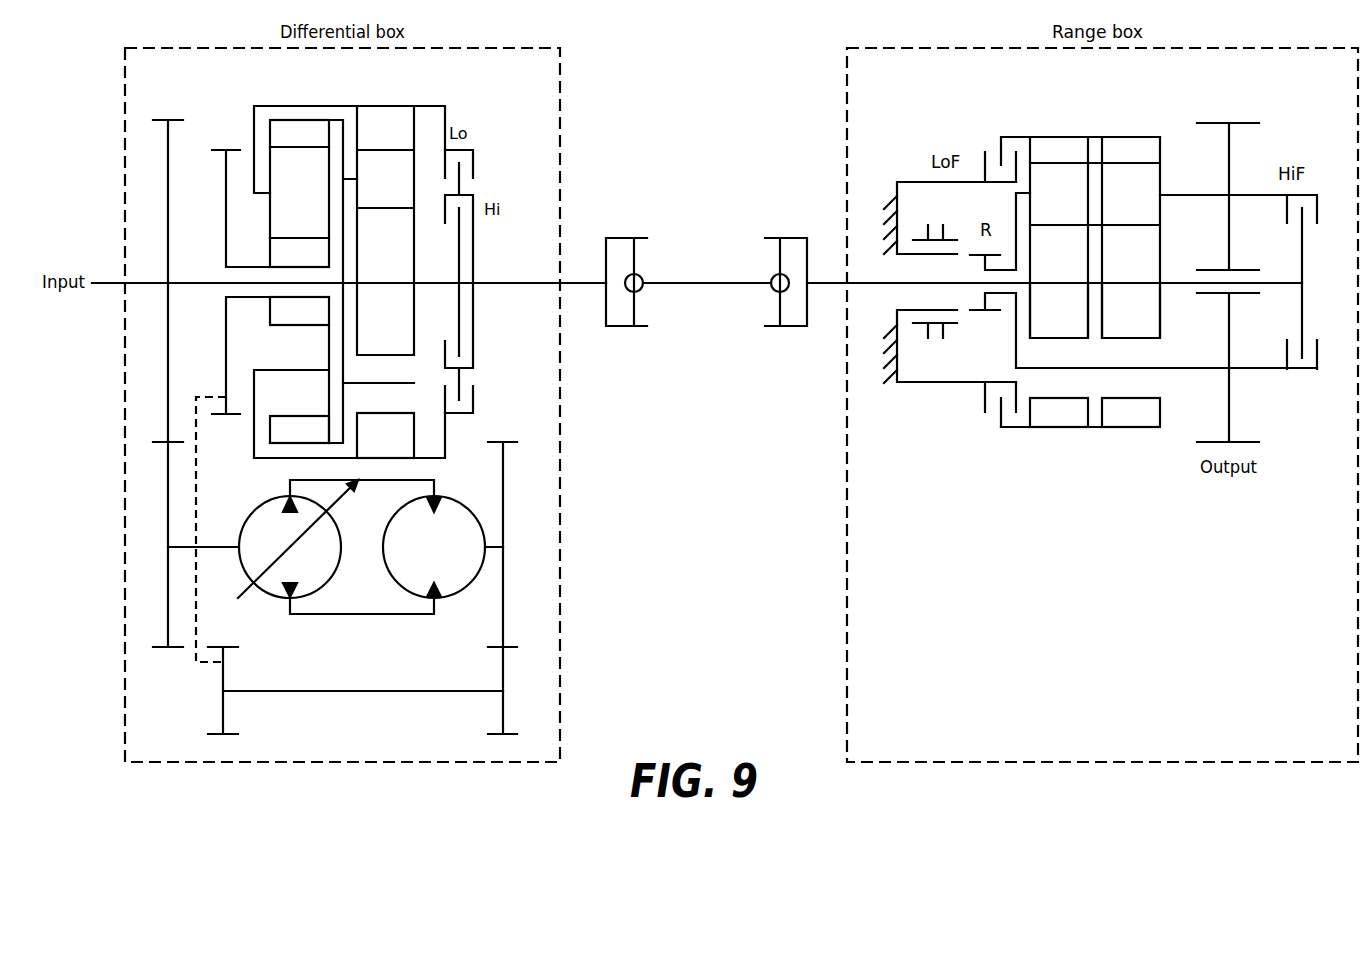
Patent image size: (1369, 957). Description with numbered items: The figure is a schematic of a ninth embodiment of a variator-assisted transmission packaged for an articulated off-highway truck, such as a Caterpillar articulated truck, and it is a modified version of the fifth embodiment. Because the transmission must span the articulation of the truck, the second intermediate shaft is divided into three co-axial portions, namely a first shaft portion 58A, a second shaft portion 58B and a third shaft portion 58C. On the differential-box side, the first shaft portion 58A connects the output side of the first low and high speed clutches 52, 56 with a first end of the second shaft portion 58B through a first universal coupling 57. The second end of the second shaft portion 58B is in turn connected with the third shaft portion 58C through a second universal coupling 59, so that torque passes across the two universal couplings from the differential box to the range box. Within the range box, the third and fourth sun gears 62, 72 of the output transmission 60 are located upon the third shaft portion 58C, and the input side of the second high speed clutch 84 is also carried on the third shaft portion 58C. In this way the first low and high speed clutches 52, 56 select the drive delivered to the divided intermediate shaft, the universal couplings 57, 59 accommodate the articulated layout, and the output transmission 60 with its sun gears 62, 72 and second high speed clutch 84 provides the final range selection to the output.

The first low speed clutch 52 is at (470, 150).
The first high speed clutch 56 is at (475, 355).
The first universal coupling 57 is at (641, 290).
The first shaft portion 58A is at (521, 283).
The second shaft portion 58B is at (703, 283).
The third shaft portion 58C is at (957, 286).
The second universal coupling 59 is at (773, 290).
The output transmission 60 is at (1111, 321).
The third sun gear 62 is at (1063, 340).
The fourth sun gear 72 is at (1160, 330).
The second high speed clutch 84 is at (1312, 194).